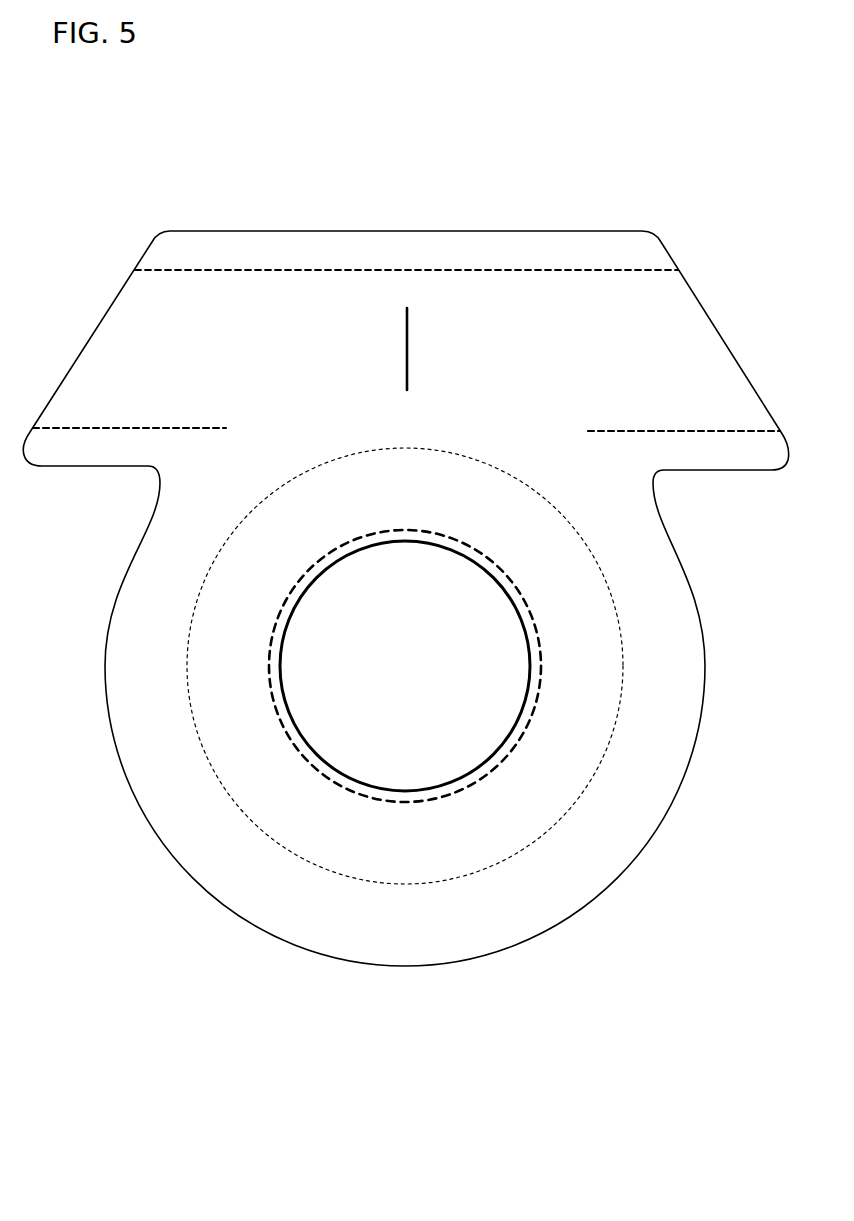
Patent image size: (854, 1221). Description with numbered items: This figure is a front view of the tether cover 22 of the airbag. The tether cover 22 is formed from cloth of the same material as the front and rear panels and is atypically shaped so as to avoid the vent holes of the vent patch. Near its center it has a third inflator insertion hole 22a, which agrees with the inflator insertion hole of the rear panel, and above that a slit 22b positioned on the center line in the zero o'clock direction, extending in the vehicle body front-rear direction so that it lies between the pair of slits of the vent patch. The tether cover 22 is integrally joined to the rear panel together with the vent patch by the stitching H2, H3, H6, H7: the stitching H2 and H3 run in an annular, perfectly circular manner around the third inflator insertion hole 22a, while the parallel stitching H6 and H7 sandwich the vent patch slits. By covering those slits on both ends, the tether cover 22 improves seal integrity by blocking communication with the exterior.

The tether cover 22 is at (231, 216).
The third inflator insertion hole 22a is at (488, 758).
The slit 22b is at (407, 345).
The stitching H2 is at (377, 798).
The stitching H3 is at (445, 882).
The stitching H6 is at (534, 270).
The stitching H7 is at (97, 428).